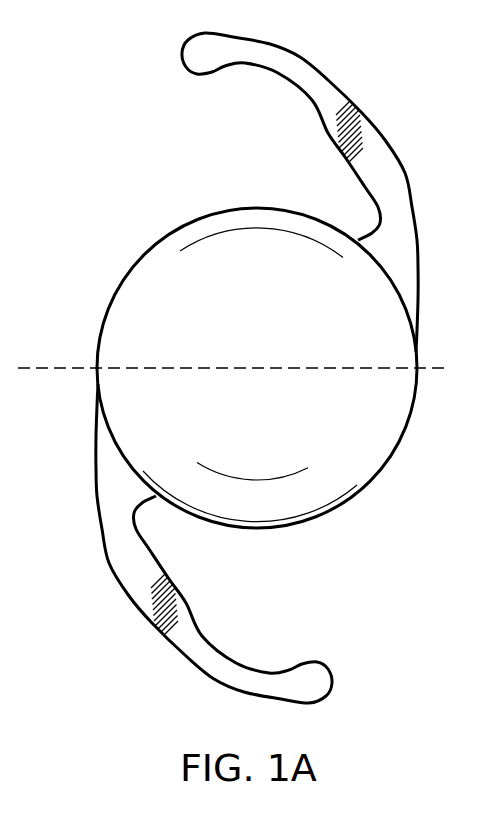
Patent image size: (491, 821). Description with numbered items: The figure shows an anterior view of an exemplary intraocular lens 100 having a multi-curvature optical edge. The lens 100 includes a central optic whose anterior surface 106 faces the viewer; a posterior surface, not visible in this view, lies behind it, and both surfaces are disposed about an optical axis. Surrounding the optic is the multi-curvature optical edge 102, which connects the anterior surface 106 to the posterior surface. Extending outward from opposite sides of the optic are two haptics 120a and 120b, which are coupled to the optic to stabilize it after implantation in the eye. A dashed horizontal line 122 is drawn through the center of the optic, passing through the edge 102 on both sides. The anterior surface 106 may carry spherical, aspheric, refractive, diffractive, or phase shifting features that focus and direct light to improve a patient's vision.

The intraocular lens 100 is at (75, 101).
The multi-curvature optical edge 102 is at (147, 249).
The anterior surface 106 is at (256, 222).
The haptic 120a is at (313, 37).
The haptic 120b is at (222, 683).
The axis line 122 is at (58, 367).